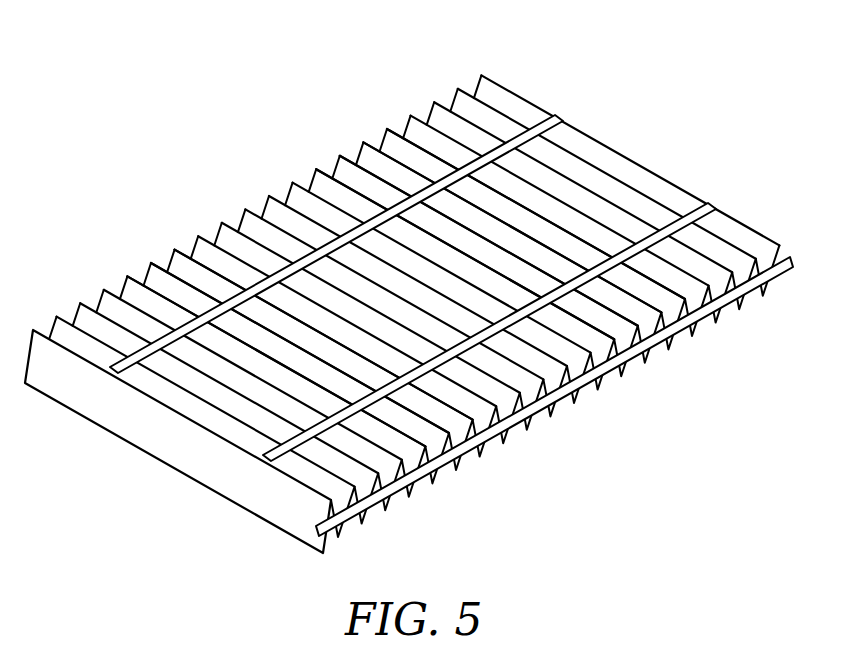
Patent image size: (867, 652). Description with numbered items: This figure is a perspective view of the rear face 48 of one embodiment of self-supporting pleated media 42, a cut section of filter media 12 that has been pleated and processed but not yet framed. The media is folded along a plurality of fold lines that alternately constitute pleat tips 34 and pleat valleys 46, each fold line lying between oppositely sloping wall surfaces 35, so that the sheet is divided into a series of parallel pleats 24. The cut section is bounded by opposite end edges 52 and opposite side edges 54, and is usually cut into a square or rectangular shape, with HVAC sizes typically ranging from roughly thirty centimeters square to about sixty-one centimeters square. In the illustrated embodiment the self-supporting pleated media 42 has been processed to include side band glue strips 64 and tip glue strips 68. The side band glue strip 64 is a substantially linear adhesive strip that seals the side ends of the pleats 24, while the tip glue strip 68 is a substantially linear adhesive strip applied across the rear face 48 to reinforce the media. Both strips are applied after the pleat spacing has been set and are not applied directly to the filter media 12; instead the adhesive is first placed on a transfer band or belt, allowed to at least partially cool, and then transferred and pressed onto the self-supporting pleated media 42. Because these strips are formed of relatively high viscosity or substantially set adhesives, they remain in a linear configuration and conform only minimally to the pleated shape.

The filter media 12 is at (85, 315).
The pleat 24 is at (115, 280).
The pleat tips 34 is at (458, 473).
The sloping wall surfaces 35 is at (253, 225).
The self-supporting pleated media 42 is at (682, 93).
The pleat valleys 46 is at (175, 257).
The rear face 48 is at (422, 78).
The end edges 52 is at (138, 457).
The side edges 54 is at (332, 163).
The side band glue strip 64 is at (380, 152).
The tip glue strip 68 is at (555, 115).